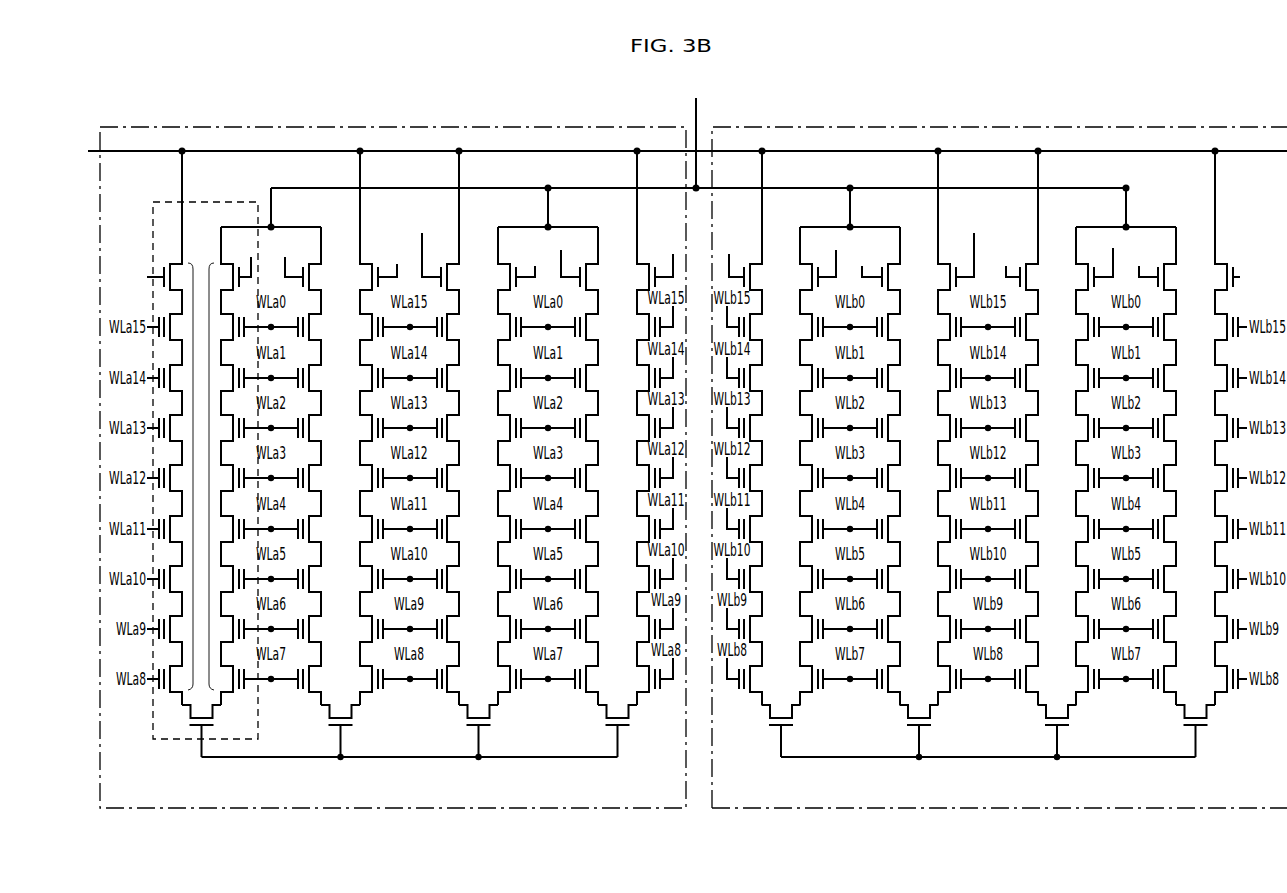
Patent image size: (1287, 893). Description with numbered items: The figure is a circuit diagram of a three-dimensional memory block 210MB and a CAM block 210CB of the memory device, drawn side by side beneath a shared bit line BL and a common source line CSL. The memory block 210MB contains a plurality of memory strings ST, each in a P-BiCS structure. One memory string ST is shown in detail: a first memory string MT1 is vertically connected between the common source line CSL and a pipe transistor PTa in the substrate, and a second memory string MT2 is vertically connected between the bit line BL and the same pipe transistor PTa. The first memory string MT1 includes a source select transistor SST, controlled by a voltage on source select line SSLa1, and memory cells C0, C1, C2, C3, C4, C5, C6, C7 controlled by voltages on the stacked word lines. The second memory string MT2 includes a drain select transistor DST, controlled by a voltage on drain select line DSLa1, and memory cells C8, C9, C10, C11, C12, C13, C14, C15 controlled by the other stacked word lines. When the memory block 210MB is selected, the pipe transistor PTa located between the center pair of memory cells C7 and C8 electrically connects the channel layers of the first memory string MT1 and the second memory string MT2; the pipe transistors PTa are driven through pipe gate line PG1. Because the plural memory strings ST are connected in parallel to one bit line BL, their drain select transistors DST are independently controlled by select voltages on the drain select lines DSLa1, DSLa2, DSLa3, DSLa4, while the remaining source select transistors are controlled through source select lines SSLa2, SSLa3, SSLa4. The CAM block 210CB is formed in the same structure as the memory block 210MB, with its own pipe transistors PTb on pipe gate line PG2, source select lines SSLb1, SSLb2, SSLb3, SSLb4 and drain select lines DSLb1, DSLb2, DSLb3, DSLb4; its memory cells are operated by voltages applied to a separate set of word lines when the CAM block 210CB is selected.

The memory block 210MB is at (505, 809).
The CAM block 210CB is at (772, 809).
The bit line BL is at (687, 143).
The common source line CSL is at (699, 155).
The memory string ST is at (160, 201).
The drain select transistor DST is at (181, 428).
The source select transistor SST is at (221, 466).
The first memory string MT1 is at (209, 551).
The second memory string MT2 is at (193, 398).
The pipe transistor PTa is at (409, 729).
The pipe transistor PTb is at (989, 729).
The pipe gate line PG1 is at (409, 757).
The pipe gate line PG2 is at (988, 757).
The drain select line DSLa1 is at (139, 277).
The drain select line DSLa2 is at (395, 266).
The drain select line DSLa3 is at (424, 250).
The drain select line DSLa4 is at (667, 261).
The source select line SSLa1 is at (247, 262).
The source select line SSLa2 is at (288, 262).
The source select line SSLa3 is at (533, 267).
The source select line SSLa4 is at (564, 259).
The drain select line DSLb1 is at (730, 261).
The drain select line DSLb2 is at (973, 250).
The drain select line DSLb3 is at (1008, 266).
The drain select line DSLb4 is at (1253, 277).
The source select line SSLb1 is at (833, 259).
The source select line SSLb2 is at (865, 267).
The source select line SSLb3 is at (1107, 258).
The source select line SSLb4 is at (1140, 267).
The memory cell C0 is at (226, 327).
The memory cell C1 is at (226, 378).
The memory cell C2 is at (226, 428).
The memory cell C3 is at (226, 478).
The memory cell C4 is at (226, 529).
The memory cell C5 is at (226, 579).
The memory cell C6 is at (226, 629).
The memory cell C7 is at (226, 679).
The memory cell C8 is at (174, 679).
The memory cell C9 is at (174, 629).
The memory cell C10 is at (175, 579).
The memory cell C11 is at (175, 529).
The memory cell C12 is at (175, 478).
The memory cell C13 is at (175, 428).
The memory cell C14 is at (175, 378).
The memory cell C15 is at (175, 327).